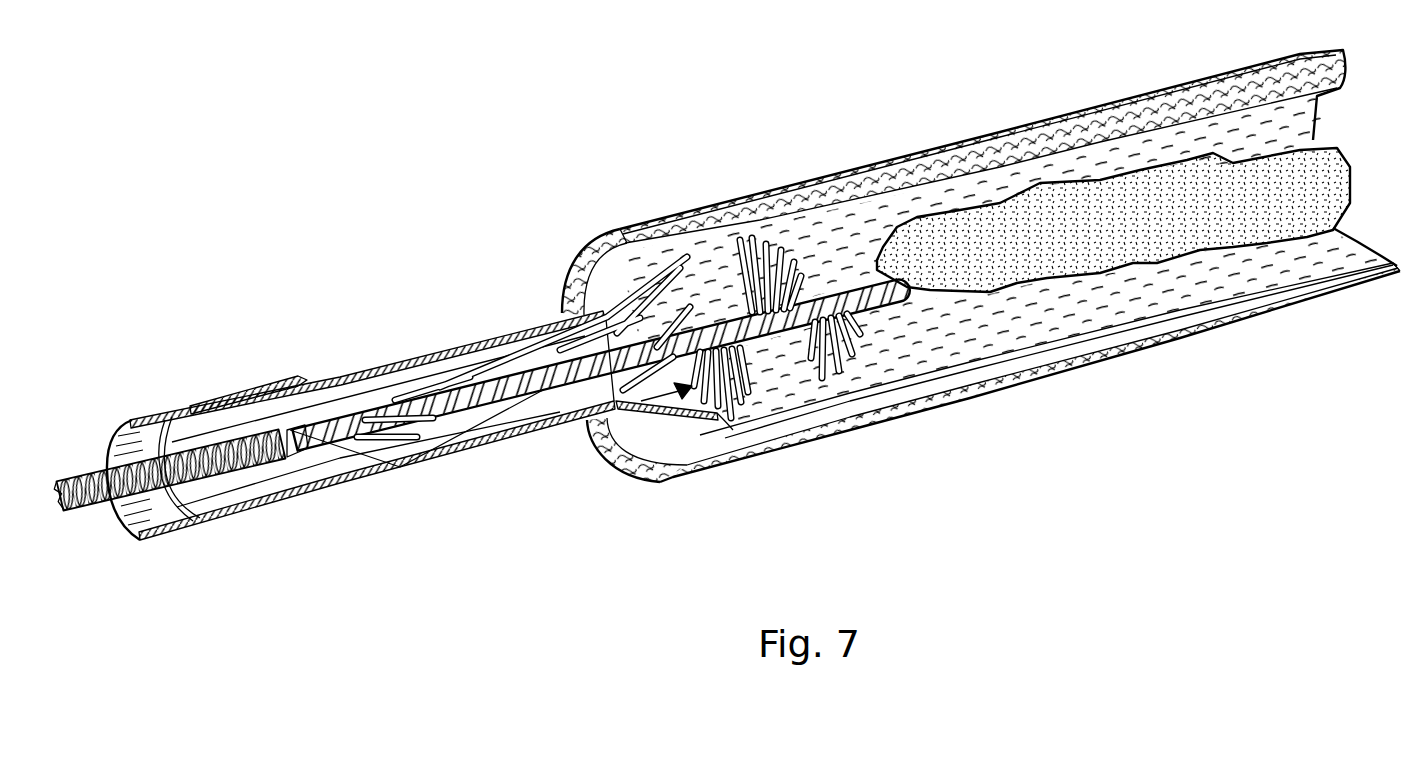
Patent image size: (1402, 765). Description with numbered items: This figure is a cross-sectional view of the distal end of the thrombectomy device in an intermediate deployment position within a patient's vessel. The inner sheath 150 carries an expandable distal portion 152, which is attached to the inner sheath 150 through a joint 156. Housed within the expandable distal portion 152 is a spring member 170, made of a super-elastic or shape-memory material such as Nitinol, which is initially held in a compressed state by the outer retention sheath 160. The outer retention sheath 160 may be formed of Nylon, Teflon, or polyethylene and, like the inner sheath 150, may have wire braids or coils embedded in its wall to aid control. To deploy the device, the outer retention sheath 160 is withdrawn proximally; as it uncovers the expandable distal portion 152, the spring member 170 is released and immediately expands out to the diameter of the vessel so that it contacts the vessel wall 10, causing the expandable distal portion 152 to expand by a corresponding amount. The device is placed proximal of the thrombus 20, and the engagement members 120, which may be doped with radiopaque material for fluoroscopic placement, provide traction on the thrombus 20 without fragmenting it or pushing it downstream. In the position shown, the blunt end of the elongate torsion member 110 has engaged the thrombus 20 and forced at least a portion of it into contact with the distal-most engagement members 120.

The vessel/cavity wall 10 is at (1162, 98).
The thrombus 20 is at (925, 245).
The elongate torsion member 110 is at (710, 323).
The engagement members 120 is at (480, 377).
The inner sheath 150 is at (190, 405).
The expandable distal portion 152 is at (733, 430).
The joint 156 is at (612, 464).
The outer retention sheath 160 is at (290, 373).
The spring member 170 is at (625, 263).